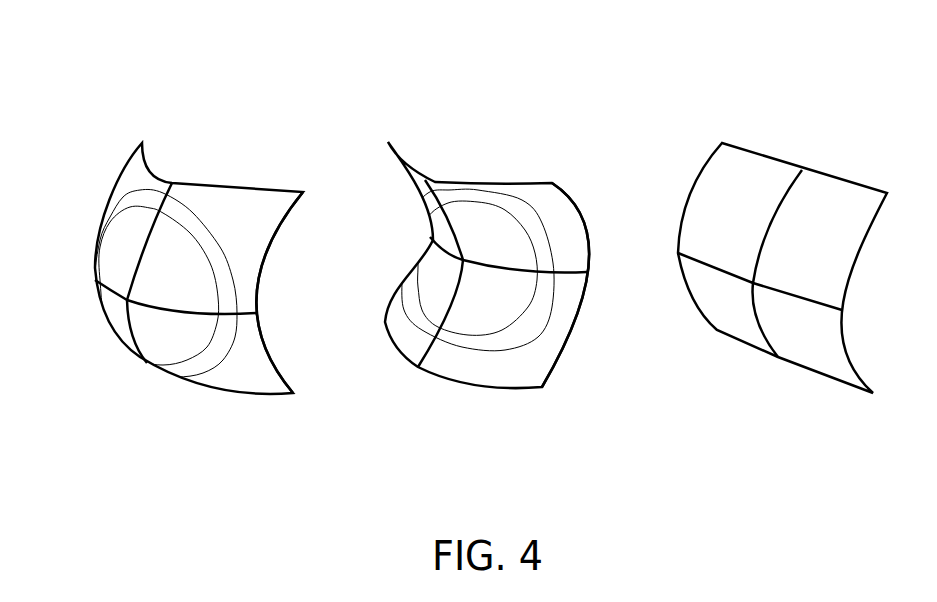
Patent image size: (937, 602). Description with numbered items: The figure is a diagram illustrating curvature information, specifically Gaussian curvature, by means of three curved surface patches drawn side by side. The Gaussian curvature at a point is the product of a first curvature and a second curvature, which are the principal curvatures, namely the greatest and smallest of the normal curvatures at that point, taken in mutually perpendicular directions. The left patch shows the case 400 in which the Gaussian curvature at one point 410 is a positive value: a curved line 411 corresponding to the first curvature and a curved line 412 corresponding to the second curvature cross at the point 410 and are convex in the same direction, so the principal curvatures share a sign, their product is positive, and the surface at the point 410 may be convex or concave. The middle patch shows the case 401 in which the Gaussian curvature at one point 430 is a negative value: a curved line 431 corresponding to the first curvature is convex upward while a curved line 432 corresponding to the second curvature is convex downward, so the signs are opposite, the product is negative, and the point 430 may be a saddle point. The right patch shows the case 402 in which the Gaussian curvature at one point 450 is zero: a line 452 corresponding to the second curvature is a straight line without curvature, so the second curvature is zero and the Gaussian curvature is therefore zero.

The case in which Gaussian curvature is positive 400 is at (252, 62).
The case in which Gaussian curvature is negative 401 is at (505, 62).
The case in which Gaussian curvature is zero 402 is at (822, 62).
The point 410 is at (123, 298).
The curved line corresponding to the first curvature 411 is at (168, 183).
The curved line corresponding to the second curvature 412 is at (258, 304).
The point 430 is at (430, 237).
The curved line corresponding to the first curvature 431 is at (433, 180).
The curved line corresponding to the second curvature 432 is at (587, 267).
The point 450 is at (755, 282).
The line corresponding to the second curvature 452 is at (842, 310).